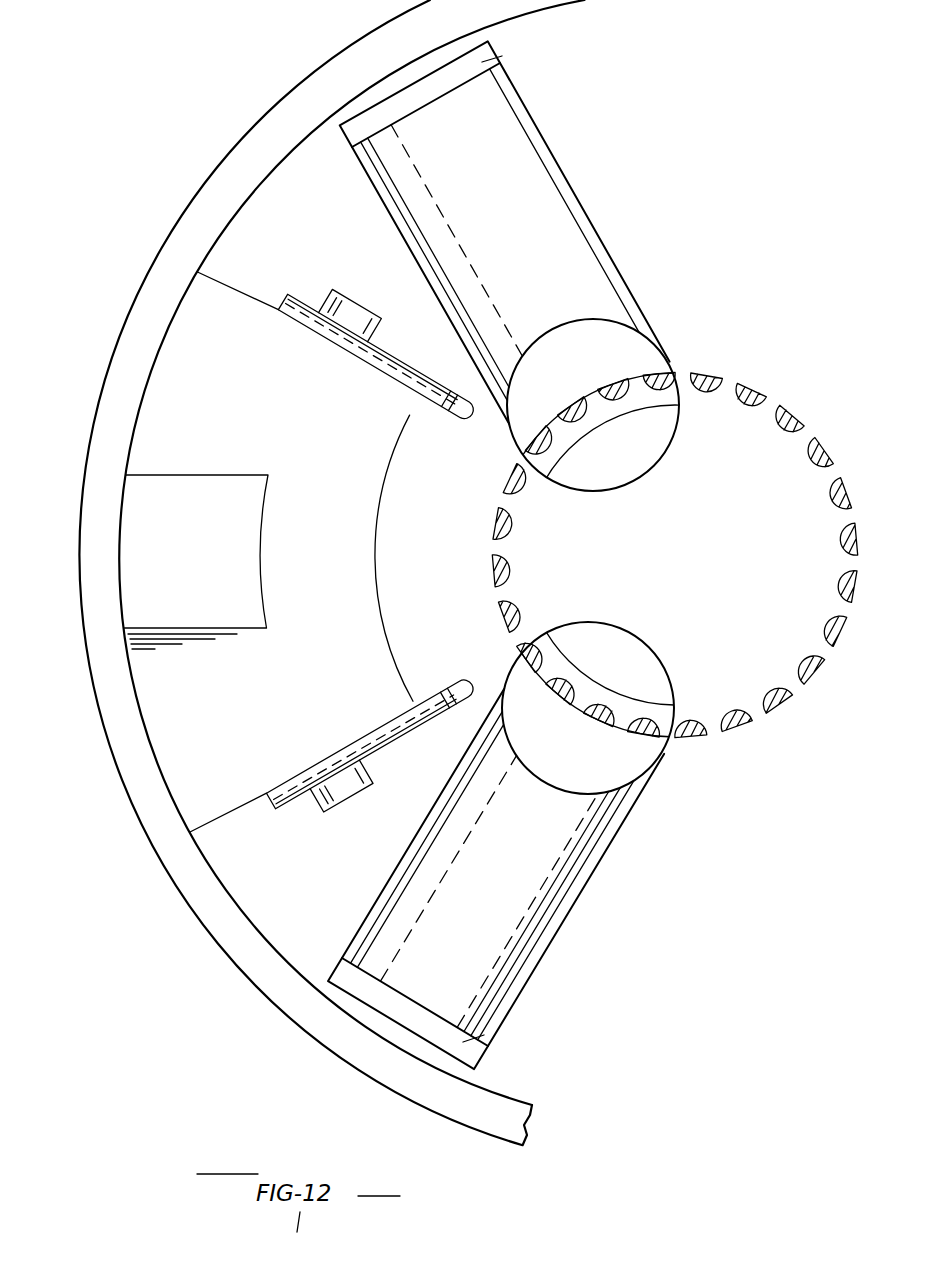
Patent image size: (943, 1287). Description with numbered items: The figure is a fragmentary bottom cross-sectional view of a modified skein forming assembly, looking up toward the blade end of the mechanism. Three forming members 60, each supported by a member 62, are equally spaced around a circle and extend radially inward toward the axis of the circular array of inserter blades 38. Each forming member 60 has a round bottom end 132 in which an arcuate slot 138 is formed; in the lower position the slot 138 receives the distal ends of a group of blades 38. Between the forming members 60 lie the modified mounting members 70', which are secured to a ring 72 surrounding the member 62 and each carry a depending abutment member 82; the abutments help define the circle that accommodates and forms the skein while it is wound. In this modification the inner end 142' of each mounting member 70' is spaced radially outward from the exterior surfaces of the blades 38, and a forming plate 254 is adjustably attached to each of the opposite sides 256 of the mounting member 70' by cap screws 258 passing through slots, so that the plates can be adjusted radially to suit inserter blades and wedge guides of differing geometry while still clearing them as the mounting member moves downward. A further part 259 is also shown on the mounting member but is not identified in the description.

The ring 72 is at (105, 370).
The mounting member 70' is at (250, 403).
The abutment member 82 is at (179, 552).
The inner end 142' is at (408, 558).
The opposite sides 256 is at (215, 281).
The upper bracket bar 259 is at (385, 362).
The forming plate 254 is at (385, 745).
The cap screw 258 is at (350, 300).
The forming member 60 is at (533, 187).
The member 62 is at (498, 52).
The round bottom end 132 is at (573, 389).
The arcuate slot 138 is at (565, 444).
The blades 38 is at (520, 533).